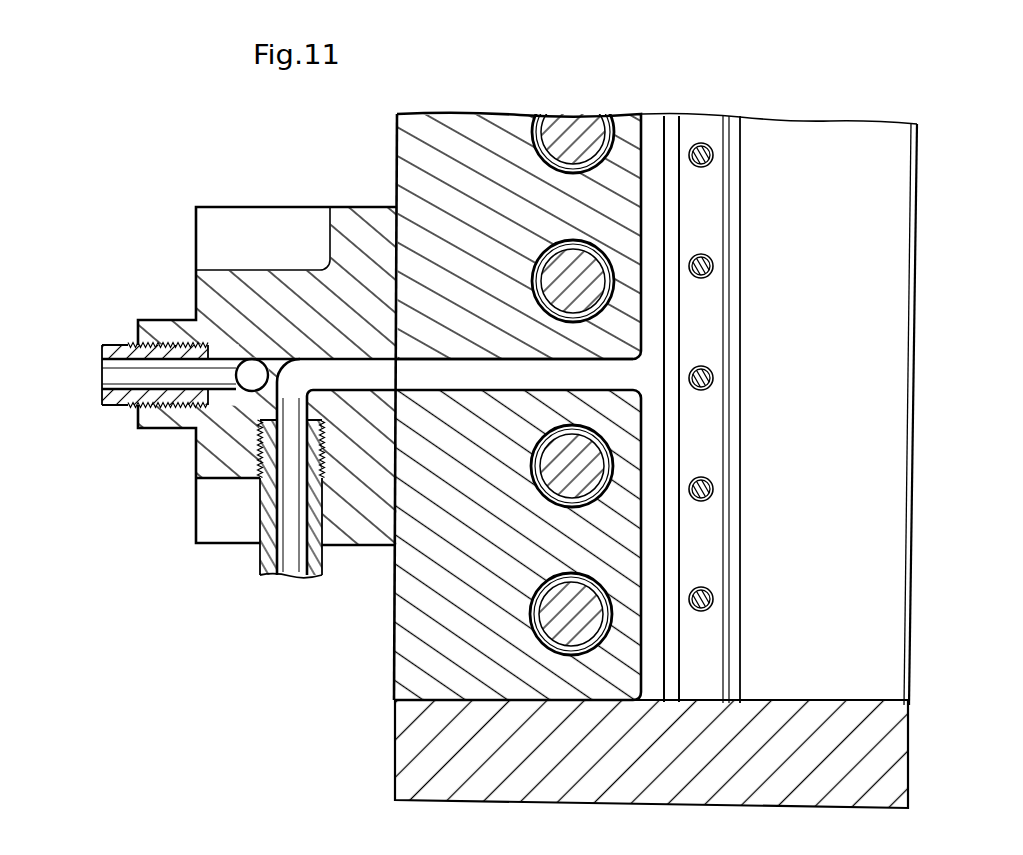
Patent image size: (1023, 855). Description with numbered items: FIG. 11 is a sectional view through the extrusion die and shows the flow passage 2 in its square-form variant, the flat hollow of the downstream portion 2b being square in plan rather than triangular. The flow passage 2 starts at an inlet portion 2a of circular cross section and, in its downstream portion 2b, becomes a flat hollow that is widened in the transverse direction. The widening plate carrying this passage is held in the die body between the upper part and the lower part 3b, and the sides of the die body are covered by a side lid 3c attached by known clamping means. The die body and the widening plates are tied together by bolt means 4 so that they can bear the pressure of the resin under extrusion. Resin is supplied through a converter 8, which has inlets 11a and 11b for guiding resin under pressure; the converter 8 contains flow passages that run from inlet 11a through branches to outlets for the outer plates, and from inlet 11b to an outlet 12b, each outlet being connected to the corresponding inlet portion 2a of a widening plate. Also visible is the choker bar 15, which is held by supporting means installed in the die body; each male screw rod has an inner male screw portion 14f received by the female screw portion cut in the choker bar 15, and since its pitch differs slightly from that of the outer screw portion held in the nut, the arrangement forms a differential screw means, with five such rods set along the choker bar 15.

The flow passage 2 is at (549, 389).
The inlet portion 2a is at (431, 389).
The downstream portion 2b is at (695, 385).
The lower part 3b is at (812, 409).
The side lid 3c is at (683, 754).
The bolt means 4 is at (481, 395).
The converter 8 is at (250, 406).
The inlet 11a is at (154, 408).
The inlet 11b is at (288, 532).
The outlet 12b is at (390, 387).
The inner male screw portion 14f is at (745, 377).
The choker bar 15 is at (732, 386).